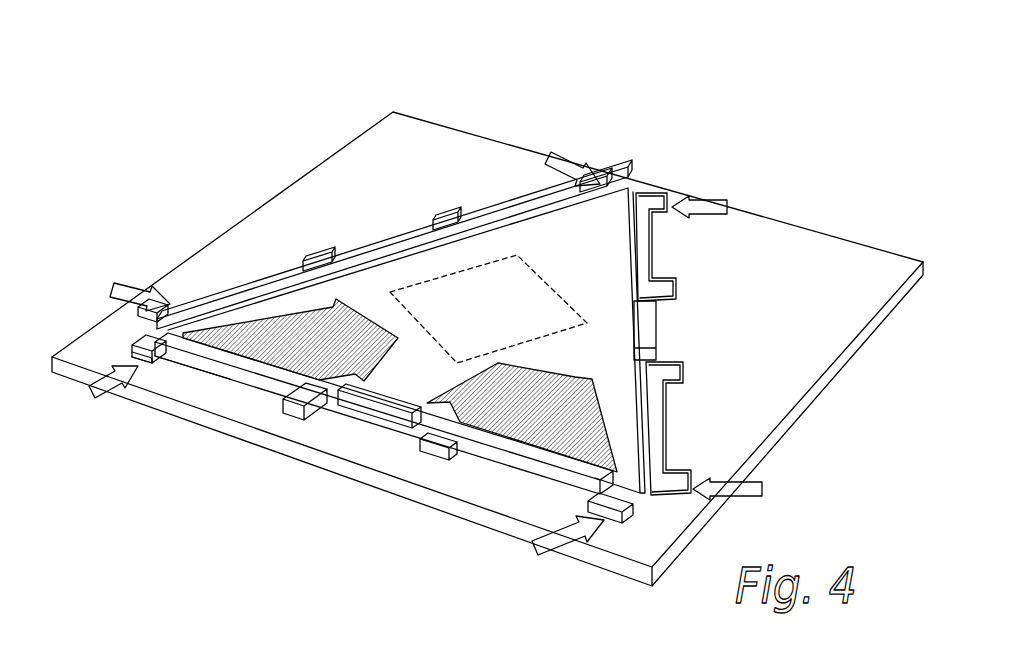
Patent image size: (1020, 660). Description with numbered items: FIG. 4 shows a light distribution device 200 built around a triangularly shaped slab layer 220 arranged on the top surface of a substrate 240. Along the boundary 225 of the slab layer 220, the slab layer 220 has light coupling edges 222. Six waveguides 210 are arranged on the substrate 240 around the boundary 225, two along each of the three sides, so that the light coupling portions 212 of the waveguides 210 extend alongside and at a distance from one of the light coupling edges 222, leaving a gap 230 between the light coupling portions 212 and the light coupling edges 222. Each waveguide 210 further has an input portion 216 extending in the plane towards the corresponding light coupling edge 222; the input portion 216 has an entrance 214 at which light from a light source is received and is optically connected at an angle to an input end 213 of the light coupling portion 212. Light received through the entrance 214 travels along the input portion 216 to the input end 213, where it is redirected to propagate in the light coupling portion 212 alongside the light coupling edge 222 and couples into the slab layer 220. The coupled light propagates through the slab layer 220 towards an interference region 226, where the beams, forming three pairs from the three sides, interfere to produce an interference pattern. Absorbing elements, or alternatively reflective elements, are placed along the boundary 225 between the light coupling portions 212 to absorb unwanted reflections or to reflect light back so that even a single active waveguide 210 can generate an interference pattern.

The light distribution device 200 is at (160, 120).
The substrate 240 is at (893, 260).
The slab layer 220 is at (613, 212).
The interference region 226 is at (540, 278).
The light coupling edges 222 is at (220, 350).
The gap 230 is at (163, 302).
The waveguides 210 is at (213, 373).
The input end 213 is at (152, 333).
The entrance 214 is at (140, 365).
The input portion 216 is at (160, 360).
The light coupling portions 212 is at (267, 376).
The boundary 225 is at (330, 385).